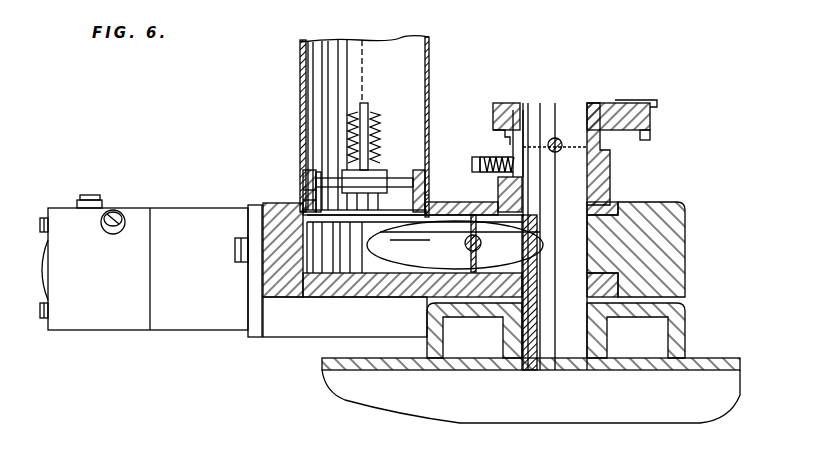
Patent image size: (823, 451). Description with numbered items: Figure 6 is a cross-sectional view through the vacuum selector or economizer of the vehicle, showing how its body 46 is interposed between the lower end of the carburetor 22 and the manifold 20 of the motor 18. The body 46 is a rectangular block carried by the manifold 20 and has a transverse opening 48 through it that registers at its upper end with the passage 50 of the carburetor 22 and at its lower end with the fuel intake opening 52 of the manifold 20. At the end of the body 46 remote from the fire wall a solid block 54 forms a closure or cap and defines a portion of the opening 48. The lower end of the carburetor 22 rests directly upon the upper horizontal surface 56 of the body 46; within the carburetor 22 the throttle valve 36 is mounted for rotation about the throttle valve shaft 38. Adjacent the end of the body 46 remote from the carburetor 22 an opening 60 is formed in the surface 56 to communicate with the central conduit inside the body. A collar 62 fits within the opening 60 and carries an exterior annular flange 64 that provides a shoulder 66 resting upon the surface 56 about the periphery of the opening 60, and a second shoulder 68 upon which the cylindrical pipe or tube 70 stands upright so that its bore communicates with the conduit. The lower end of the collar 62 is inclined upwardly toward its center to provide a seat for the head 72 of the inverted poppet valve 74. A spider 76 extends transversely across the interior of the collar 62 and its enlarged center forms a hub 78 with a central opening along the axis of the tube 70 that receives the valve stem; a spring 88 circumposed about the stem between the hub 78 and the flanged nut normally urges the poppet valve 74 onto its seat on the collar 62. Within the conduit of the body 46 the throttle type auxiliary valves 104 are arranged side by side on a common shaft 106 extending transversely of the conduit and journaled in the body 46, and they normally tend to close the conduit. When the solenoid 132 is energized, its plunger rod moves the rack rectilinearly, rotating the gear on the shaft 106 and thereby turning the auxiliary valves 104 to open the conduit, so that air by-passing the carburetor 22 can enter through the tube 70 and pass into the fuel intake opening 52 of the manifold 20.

The motor 18 is at (372, 405).
The manifold 20 is at (685, 325).
The carburetor 22 is at (612, 170).
The throttle valve 36 is at (568, 147).
The throttle valve shaft 38 is at (553, 138).
The body portion 46 is at (385, 297).
The transverse opening 48 is at (592, 232).
The passage 50 is at (577, 140).
The fuel intake opening 52 is at (522, 370).
The solid block 54 is at (433, 272).
The upper horizontal surface 56 is at (462, 185).
The opening 60 is at (428, 196).
The collar 62 is at (316, 182).
The annular flange 64 is at (304, 190).
The shoulder 66 is at (302, 199).
The shoulder 68 is at (302, 178).
The tube 70 is at (428, 70).
The valve head 72 is at (333, 222).
The inverted poppet valve 74 is at (372, 131).
The spider 76 is at (416, 176).
The hub 78 is at (387, 178).
The spring 88 is at (380, 150).
The auxiliary valves 104 is at (540, 254).
The shaft 106 is at (387, 253).
The solenoid 132 is at (178, 181).